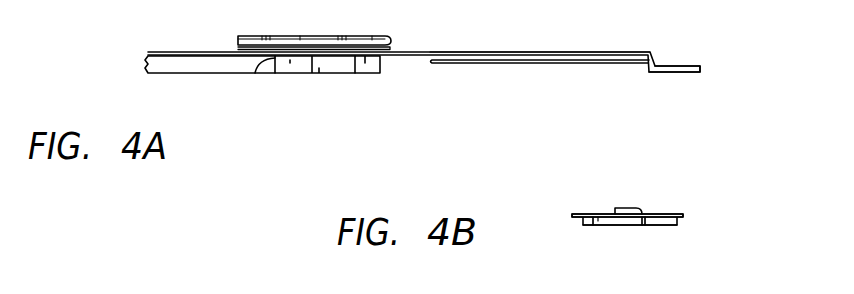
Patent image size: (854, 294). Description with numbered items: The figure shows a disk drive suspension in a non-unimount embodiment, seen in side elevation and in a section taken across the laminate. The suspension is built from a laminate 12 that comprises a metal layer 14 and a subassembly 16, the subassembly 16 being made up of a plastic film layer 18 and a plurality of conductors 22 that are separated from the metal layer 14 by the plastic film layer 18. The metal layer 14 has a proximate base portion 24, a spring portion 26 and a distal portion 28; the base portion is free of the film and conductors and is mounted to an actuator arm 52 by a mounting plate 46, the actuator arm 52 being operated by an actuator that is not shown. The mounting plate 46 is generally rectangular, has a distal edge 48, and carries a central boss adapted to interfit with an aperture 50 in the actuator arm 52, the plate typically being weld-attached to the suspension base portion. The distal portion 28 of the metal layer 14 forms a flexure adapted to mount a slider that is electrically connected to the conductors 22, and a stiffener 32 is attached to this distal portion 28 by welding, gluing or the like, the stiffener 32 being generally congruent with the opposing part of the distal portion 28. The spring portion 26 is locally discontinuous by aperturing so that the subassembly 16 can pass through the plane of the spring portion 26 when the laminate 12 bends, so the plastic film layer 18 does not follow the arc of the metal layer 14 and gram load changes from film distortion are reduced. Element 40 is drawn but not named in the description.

In FIG. 4A, the laminate 12 is at (477, 51).
In FIG. 4B, the laminate 12 is at (556, 212).
In FIG. 4B, the metal layer 14 is at (577, 218).
In FIG. 4B, the subassembly 16 is at (603, 200).
In FIG. 4B, the plastic film layer 18 is at (637, 208).
In FIG. 4A, the conductors 22 is at (551, 51).
In FIG. 4B, the conductors 22 is at (630, 207).
In FIG. 4A, the base portion 24 is at (370, 72).
In FIG. 4A, the spring portion 26 is at (417, 51).
In FIG. 4A, the distal portion 28 is at (650, 53).
In FIG. 4A, the stiffener 32 is at (616, 64).
In FIG. 4B, the stiffener 32 is at (633, 226).
In FIG. 4A, the middle body section 40 is at (295, 75).
In FIG. 4A, the mounting plate 46 is at (269, 36).
In FIG. 4A, the distal edge 48 is at (391, 47).
In FIG. 4A, the aperture 50 is at (255, 73).
In FIG. 4A, the actuator arm 52 is at (186, 73).